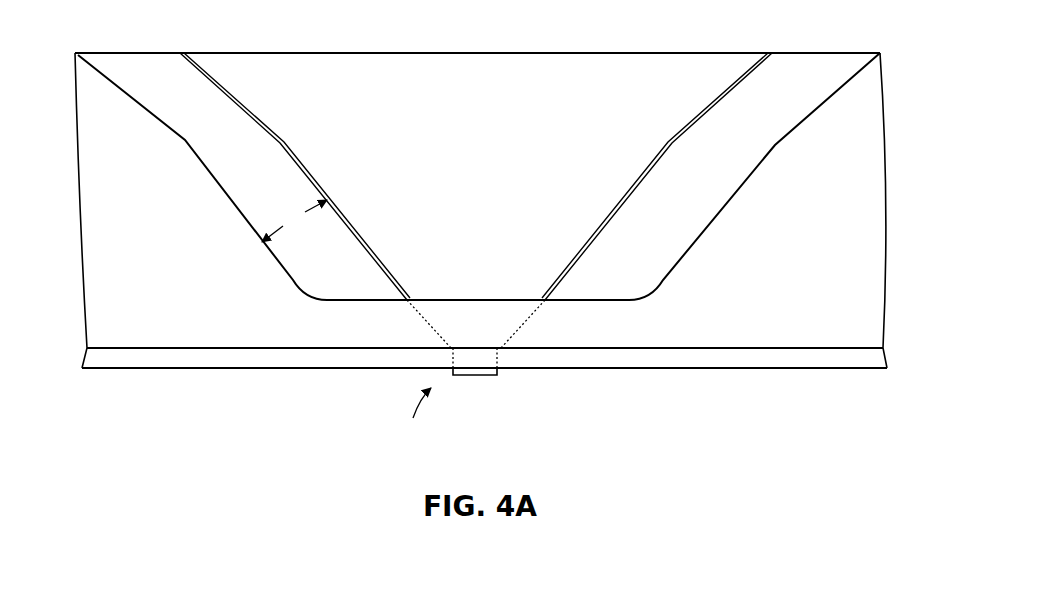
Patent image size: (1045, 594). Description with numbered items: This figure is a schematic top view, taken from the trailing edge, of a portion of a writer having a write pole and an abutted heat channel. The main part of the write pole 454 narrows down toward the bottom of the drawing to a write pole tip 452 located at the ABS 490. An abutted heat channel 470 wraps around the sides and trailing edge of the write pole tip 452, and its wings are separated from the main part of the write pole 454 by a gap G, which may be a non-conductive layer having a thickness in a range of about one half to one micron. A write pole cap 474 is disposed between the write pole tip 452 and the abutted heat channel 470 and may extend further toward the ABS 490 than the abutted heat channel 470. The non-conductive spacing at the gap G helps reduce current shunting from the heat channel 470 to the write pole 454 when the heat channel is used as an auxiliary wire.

The write pole 454 is at (598, 77).
The abutted heat channel 470 is at (400, 330).
The write pole cap 474 is at (653, 358).
The write pole tip 452 is at (481, 375).
The ABS 490 is at (432, 404).
The gap G is at (294, 221).